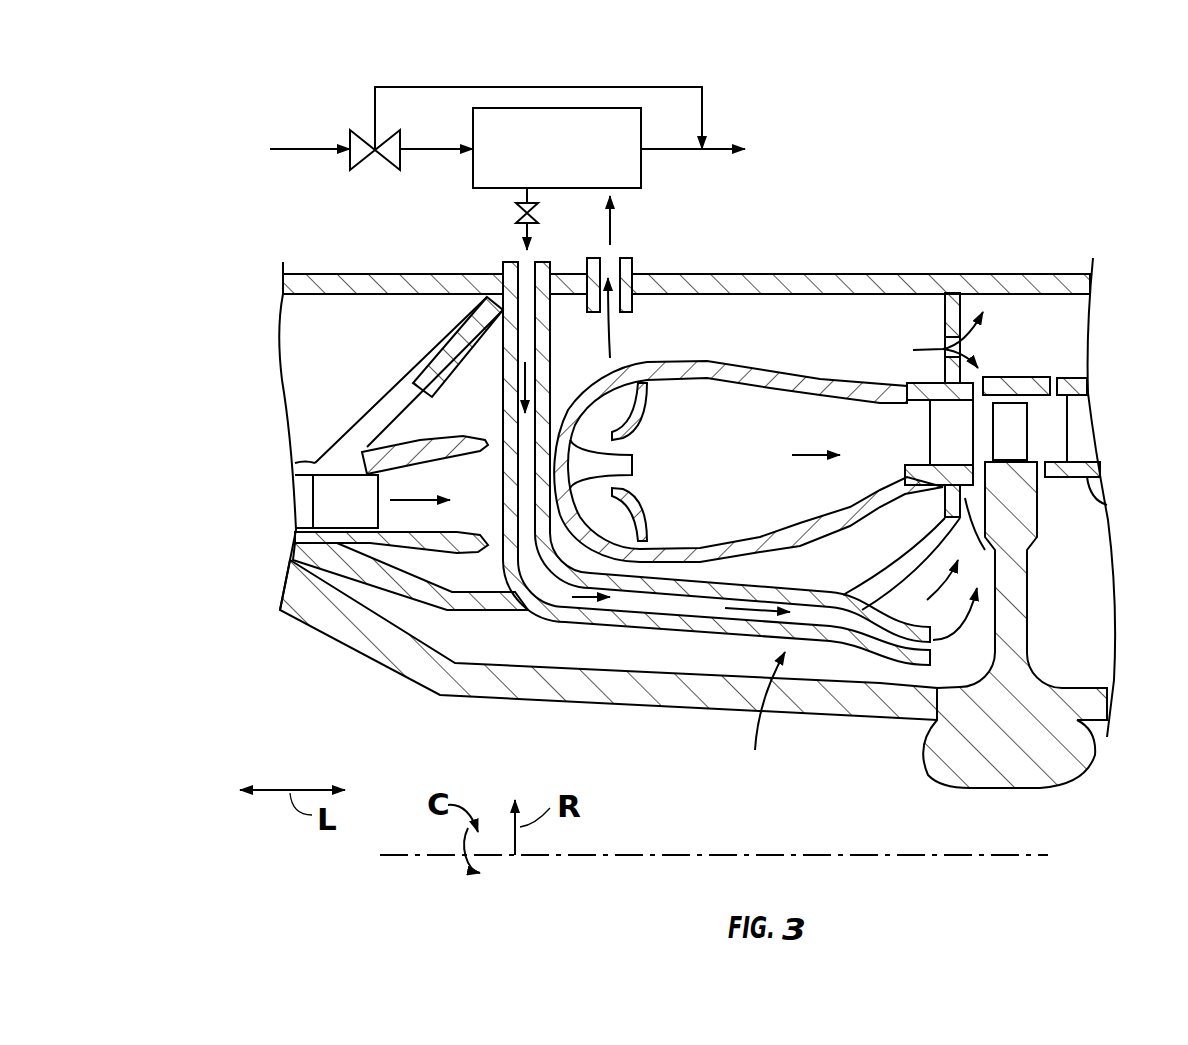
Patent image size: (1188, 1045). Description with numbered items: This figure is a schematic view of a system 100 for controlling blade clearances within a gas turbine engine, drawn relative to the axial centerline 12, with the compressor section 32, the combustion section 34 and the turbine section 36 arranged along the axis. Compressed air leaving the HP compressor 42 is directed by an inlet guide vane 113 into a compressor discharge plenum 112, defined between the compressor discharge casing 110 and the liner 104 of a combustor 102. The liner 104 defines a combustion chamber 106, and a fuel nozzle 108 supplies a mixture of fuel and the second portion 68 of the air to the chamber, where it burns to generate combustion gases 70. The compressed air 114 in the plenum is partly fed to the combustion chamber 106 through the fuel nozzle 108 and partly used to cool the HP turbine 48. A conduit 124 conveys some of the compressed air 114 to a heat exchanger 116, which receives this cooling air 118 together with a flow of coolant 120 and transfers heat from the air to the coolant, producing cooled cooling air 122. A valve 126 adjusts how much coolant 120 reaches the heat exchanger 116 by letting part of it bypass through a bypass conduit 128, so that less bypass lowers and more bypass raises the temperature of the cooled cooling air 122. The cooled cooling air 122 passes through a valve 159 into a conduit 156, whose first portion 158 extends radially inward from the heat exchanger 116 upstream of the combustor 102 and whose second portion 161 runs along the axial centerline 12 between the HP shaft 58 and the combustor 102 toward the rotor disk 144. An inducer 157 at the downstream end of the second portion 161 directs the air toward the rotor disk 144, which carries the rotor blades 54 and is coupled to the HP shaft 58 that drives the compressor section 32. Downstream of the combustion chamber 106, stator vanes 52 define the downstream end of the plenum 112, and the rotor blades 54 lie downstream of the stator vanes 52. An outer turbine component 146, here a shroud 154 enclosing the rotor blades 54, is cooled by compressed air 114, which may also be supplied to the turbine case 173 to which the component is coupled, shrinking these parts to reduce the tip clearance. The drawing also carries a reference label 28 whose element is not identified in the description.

The system for controlling blade clearances 100 is at (205, 72).
The axial centerline 12 is at (637, 855).
The compressor discharge casing 28 is at (950, 262).
The compressor section 32 is at (323, 440).
The combustion section 34 is at (762, 262).
The turbine section 36 is at (1049, 248).
The HP compressor 42 is at (348, 417).
The HP turbine 48 is at (1055, 315).
The stator vane 52 is at (930, 427).
The rotor blade 54 is at (1030, 420).
The HP shaft 58 is at (677, 707).
The second portion of the air 68 is at (413, 498).
The combustion gases 70 is at (808, 457).
The combustor 102 is at (662, 345).
The liner 104 is at (720, 360).
The combustion chamber 106 is at (739, 454).
The fuel nozzle 108 is at (652, 464).
The compressor discharge casing 110 is at (820, 276).
The compressor discharge plenum 112 is at (841, 332).
The inlet guide vane 113 is at (345, 501).
The compressed air 114 is at (628, 335).
The heat exchanger 116 is at (647, 167).
The cooling air 118 is at (610, 223).
The coolant 120 is at (300, 146).
The cooled cooling air 122 is at (521, 238).
The conduit 124 is at (633, 267).
The valve 126 is at (388, 166).
The bypass conduit 128 is at (540, 87).
The rotor disk 144 is at (985, 783).
The outer turbine component 146 is at (994, 367).
The shroud 154 is at (1007, 373).
The conduit 156 is at (761, 718).
The inducer 157 is at (870, 657).
The first portion 158 is at (575, 317).
The valve 159 is at (517, 211).
The second portion 161 is at (643, 620).
The turbine case 173 is at (1080, 272).